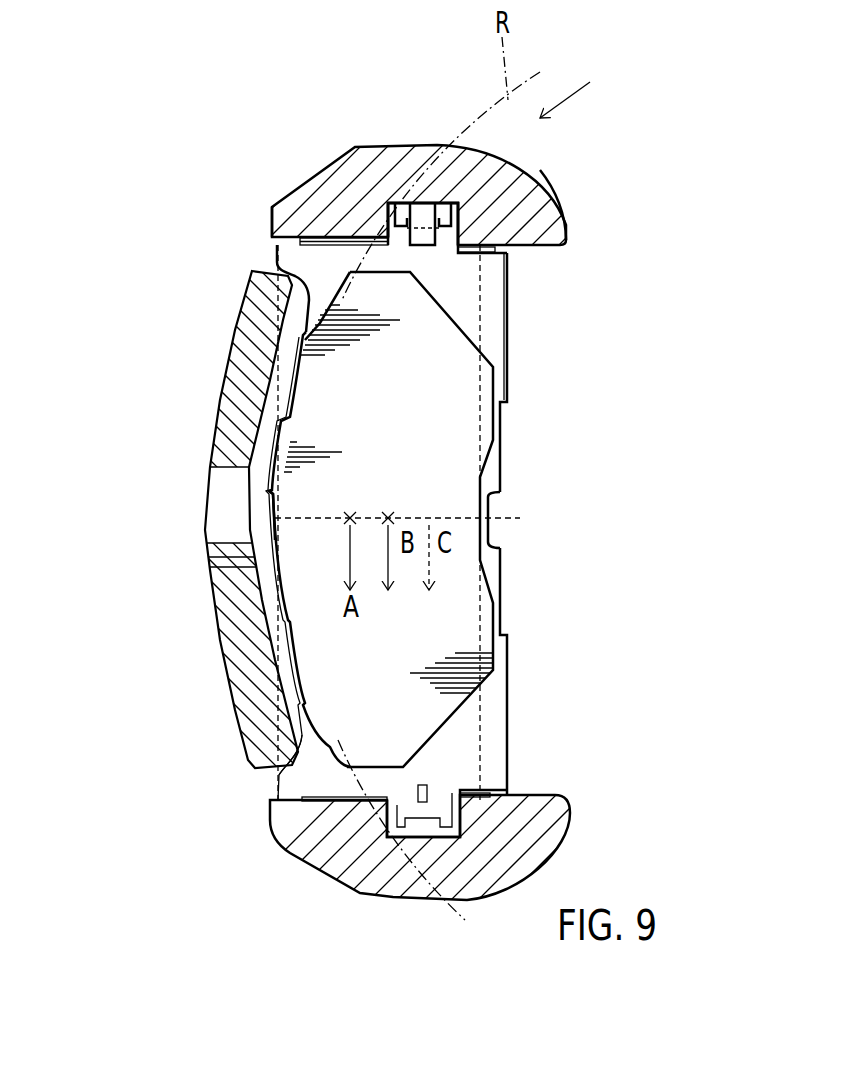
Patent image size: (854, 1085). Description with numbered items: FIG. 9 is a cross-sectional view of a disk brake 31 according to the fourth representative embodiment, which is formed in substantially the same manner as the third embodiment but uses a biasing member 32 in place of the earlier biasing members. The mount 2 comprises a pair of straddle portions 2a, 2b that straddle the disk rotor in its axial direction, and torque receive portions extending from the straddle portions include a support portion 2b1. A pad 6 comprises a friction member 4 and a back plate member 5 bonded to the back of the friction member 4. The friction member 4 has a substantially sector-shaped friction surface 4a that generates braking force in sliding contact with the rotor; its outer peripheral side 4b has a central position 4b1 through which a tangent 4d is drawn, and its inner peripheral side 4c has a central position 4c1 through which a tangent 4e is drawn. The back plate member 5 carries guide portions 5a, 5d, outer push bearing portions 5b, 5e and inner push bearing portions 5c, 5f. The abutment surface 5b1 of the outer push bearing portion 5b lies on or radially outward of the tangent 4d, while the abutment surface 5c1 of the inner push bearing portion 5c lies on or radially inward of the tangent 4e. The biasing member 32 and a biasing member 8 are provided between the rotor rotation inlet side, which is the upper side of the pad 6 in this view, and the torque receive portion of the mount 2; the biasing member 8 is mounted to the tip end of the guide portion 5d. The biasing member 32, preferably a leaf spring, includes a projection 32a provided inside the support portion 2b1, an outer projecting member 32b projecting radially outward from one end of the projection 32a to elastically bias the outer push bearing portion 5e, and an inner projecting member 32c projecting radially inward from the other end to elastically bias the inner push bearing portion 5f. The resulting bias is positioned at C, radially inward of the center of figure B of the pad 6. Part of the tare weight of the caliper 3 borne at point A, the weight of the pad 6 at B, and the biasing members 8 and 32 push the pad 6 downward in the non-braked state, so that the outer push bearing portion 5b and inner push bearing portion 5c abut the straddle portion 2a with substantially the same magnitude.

The mount 2 is at (422, 498).
The straddle portion 2a is at (370, 878).
The straddle portion 2b is at (422, 176).
The support portion 2b1 is at (377, 210).
The caliper 3 is at (245, 355).
The friction member 4 is at (357, 541).
The friction surface 4a is at (330, 660).
The outer peripheral side 4b is at (270, 425).
The central position of outer peripheral side 4b1 is at (250, 575).
The inner peripheral side 4c is at (490, 452).
The central position of inner peripheral side 4c1 is at (478, 520).
The tangent 4d is at (268, 340).
The tangent 4e is at (480, 690).
The back plate member 5 is at (397, 557).
The guide portion 5a is at (445, 797).
The outer push bearing portion 5b is at (270, 797).
The abutment surface 5b1 is at (300, 812).
The inner push bearing portion 5c is at (500, 793).
The abutment surface 5c1 is at (540, 843).
The guide portion 5d is at (507, 273).
The outer push bearing portion 5e is at (273, 242).
The inner push bearing portion 5f is at (495, 250).
The pad 6 is at (166, 500).
The biasing member 8 is at (383, 197).
The disk brake 31 is at (190, 240).
The biasing member 32 is at (367, 161).
The projection 32a is at (400, 201).
The outer projecting member 32b is at (276, 228).
The inner projecting member 32c is at (523, 225).